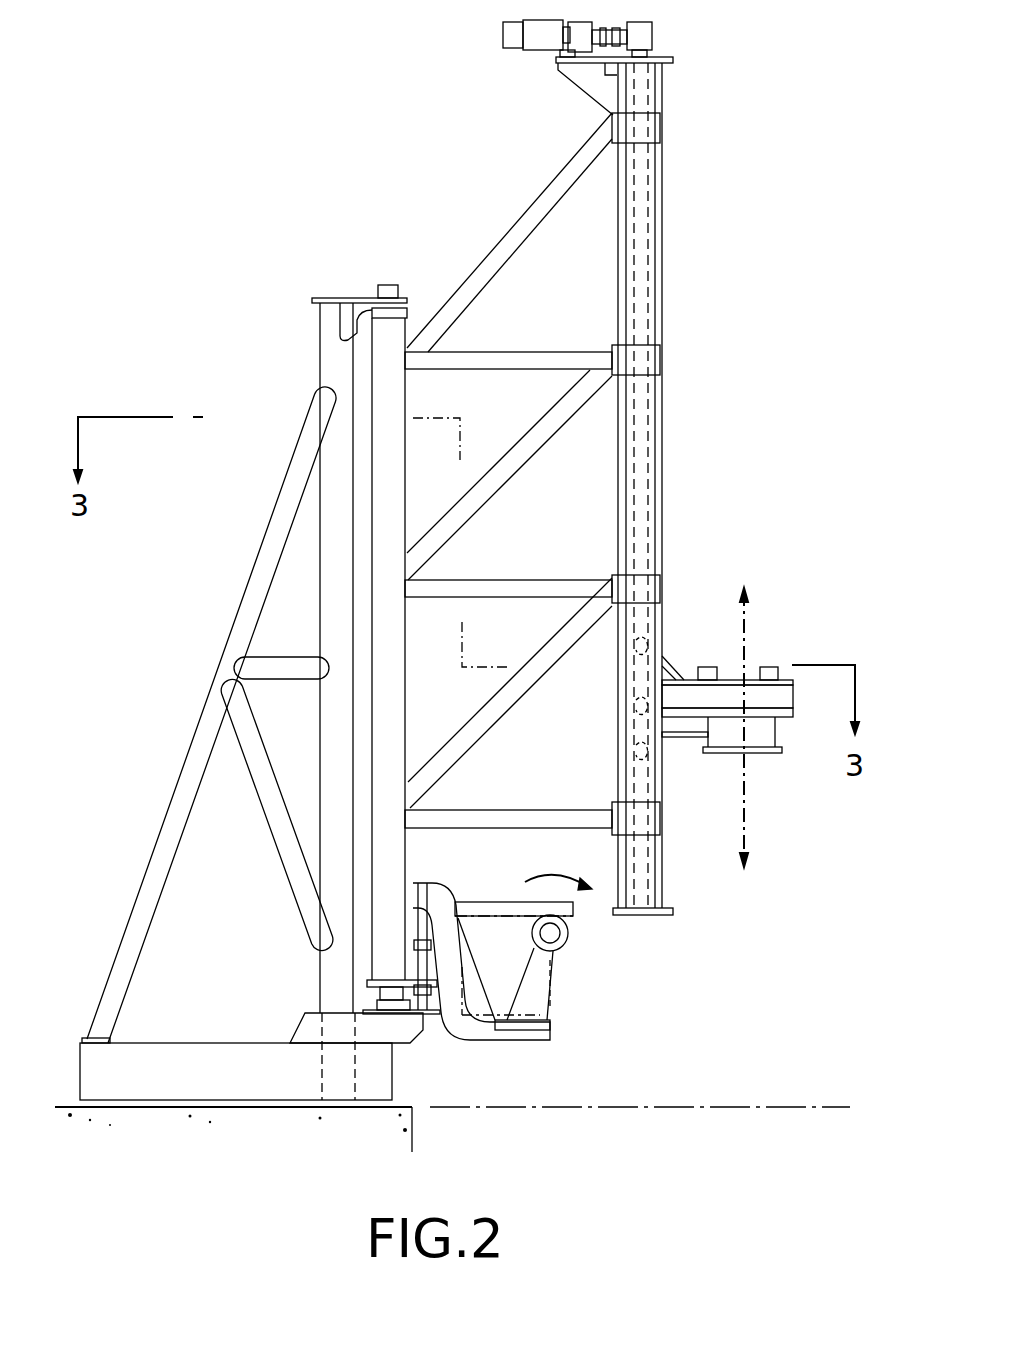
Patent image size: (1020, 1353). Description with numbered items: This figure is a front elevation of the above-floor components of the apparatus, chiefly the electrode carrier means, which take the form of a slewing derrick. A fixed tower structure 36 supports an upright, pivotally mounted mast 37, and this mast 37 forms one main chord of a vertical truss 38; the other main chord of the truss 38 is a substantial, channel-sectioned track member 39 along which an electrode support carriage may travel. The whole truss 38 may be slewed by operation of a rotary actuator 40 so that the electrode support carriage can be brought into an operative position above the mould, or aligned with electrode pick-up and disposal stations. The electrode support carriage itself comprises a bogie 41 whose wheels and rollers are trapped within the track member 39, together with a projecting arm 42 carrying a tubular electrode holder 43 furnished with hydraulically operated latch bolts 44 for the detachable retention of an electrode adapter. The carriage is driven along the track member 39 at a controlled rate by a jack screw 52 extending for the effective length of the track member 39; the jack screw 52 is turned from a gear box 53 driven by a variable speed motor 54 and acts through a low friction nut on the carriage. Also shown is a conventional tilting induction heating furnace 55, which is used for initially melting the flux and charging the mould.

The fixed tower structure 36 is at (330, 522).
The mast 37 is at (380, 650).
The vertical truss 38 is at (512, 233).
The track member 39 is at (663, 516).
The rotary actuator 40 is at (436, 1018).
The bogie 41 is at (673, 668).
The projecting arm 42 is at (782, 710).
The tubular electrode holder 43 is at (720, 748).
The latch bolts 44 is at (776, 667).
The jack screw 52 is at (650, 238).
The gear box 53 is at (655, 42).
The variable speed motor 54 is at (500, 42).
The tilting induction heating furnace 55 is at (557, 958).